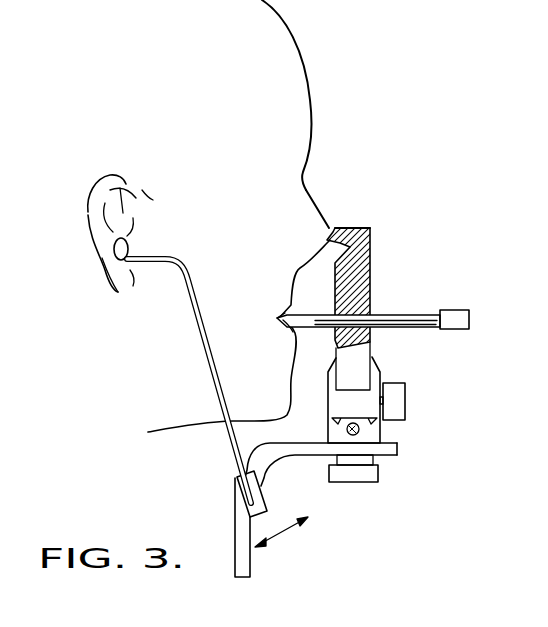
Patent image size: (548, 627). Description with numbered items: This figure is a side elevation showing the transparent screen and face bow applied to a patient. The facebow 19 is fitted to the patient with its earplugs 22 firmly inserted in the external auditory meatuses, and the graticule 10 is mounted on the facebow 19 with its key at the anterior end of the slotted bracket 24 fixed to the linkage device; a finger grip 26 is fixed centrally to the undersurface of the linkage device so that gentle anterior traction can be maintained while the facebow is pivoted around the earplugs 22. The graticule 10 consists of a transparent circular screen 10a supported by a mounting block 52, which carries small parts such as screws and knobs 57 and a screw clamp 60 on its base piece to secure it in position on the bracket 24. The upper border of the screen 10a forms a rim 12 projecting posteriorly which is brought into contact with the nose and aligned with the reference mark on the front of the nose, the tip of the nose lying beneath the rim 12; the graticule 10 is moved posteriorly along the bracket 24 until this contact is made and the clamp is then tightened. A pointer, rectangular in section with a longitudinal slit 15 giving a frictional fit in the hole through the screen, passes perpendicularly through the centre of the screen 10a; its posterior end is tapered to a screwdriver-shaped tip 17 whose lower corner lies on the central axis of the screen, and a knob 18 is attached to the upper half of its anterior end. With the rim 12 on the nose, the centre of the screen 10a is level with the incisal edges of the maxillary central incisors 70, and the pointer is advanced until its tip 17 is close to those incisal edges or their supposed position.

The graticule 10 is at (370, 282).
The transparent circular screen 10a is at (356, 228).
The rim 12 is at (331, 227).
The longitudinal slit 15 is at (403, 315).
The screwdriver-shaped tip 17 is at (294, 328).
The knob 18 is at (469, 321).
The facebow 19 is at (198, 380).
The earplugs 22 is at (124, 252).
The bracket 24 is at (397, 449).
The finger grip 26 is at (245, 568).
The mounting block 52 is at (386, 366).
The knob 57 is at (405, 402).
The screw clamp 60 is at (360, 475).
The maxillary central incisors 70 is at (280, 321).